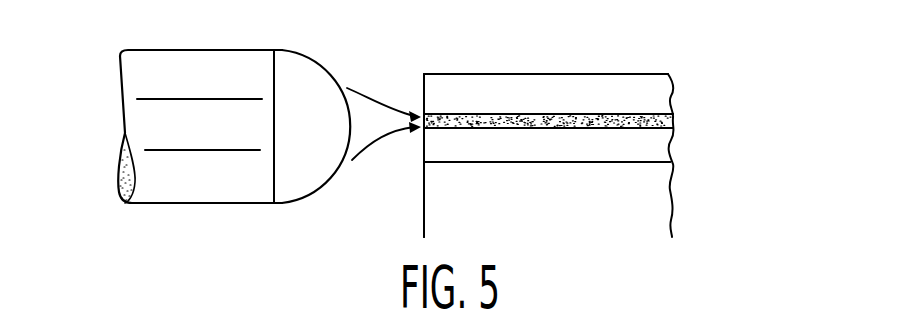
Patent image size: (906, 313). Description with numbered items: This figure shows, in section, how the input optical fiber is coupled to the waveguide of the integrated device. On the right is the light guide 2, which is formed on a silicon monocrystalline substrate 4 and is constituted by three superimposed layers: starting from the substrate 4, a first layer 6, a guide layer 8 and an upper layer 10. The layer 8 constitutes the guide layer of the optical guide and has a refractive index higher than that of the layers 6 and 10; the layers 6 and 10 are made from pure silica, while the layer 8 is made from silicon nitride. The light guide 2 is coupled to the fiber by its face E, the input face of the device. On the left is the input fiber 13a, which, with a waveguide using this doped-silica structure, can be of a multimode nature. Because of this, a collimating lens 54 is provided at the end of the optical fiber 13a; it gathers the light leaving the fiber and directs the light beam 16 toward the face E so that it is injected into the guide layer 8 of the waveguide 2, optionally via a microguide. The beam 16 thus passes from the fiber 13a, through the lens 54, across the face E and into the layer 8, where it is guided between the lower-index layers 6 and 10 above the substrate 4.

The input fiber 13a is at (145, 75).
The collimating lens 54 is at (300, 85).
The light beam 16 is at (372, 145).
The face E is at (421, 88).
The light guide 2 is at (700, 100).
The layer 10 is at (657, 84).
The guide layer 8 is at (658, 124).
The layer 6 is at (654, 147).
The substrate 4 is at (657, 208).